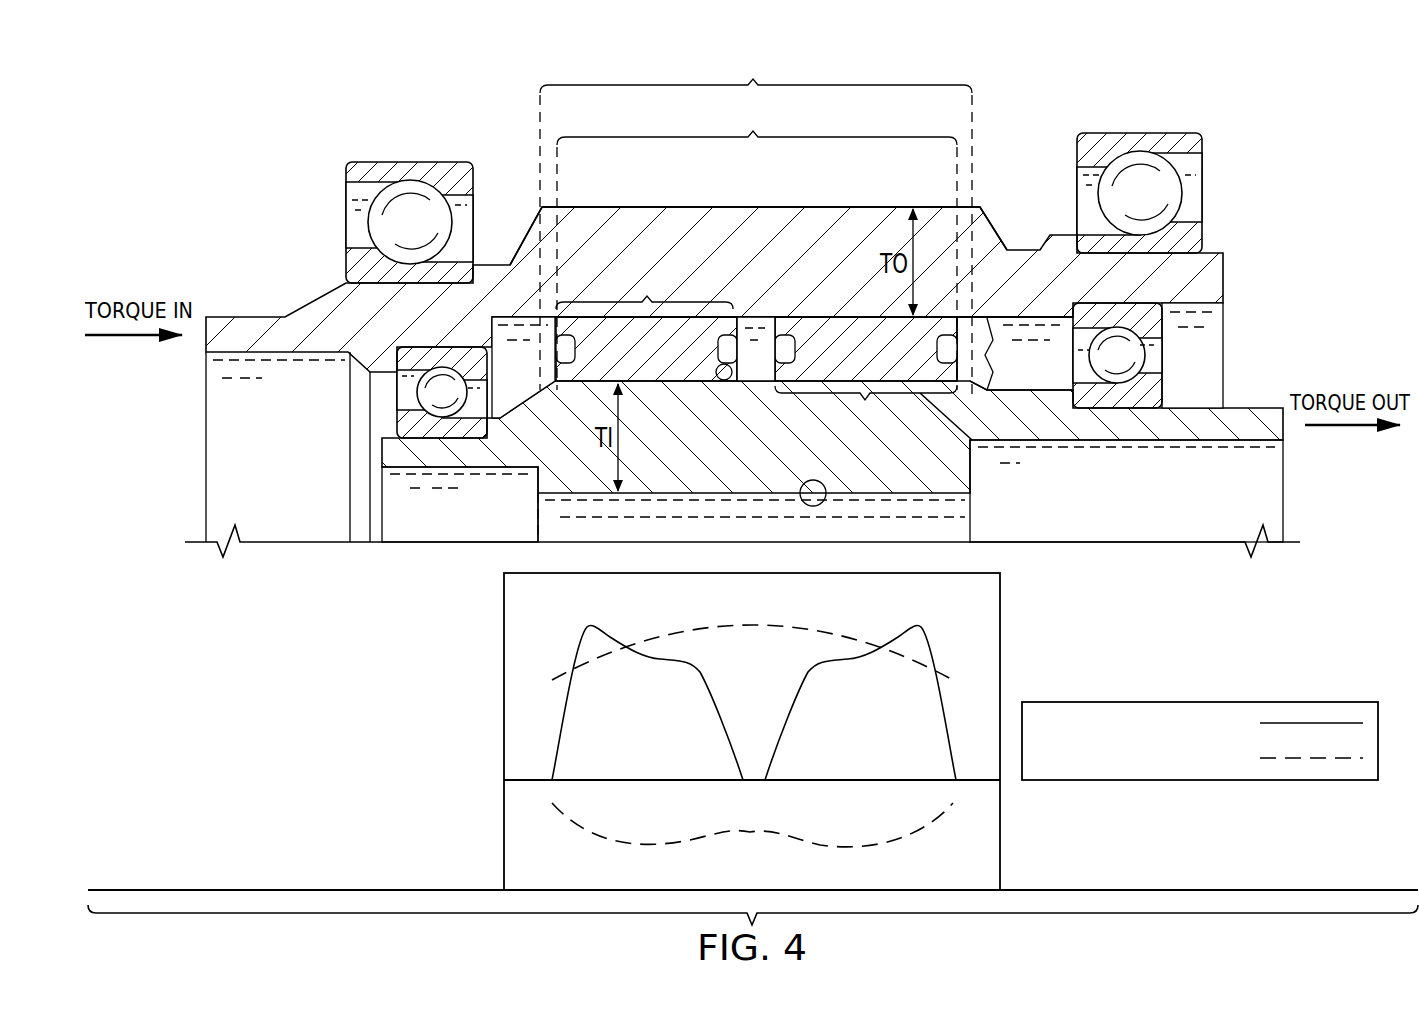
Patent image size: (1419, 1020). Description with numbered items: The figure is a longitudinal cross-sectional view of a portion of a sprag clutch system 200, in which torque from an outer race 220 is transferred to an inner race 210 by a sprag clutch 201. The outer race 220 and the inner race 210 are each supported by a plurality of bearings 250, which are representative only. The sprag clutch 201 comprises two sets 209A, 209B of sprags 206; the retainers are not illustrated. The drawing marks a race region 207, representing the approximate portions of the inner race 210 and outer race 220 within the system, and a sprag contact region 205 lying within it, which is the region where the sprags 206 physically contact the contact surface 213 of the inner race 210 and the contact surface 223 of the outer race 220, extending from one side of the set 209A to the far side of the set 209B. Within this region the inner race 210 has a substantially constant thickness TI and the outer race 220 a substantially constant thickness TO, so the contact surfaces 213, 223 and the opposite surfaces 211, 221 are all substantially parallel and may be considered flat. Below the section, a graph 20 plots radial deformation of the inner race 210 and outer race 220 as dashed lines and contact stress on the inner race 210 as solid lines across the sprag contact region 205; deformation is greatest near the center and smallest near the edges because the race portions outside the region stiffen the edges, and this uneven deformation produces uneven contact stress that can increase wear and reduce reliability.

The sprag clutch system 200 is at (464, 99).
The sprag clutch 201 is at (1015, 353).
The sprag contact region 205 is at (757, 243).
The sprags 206 is at (666, 365).
The race region 207 is at (756, 220).
The first set of sprags 209A is at (644, 284).
The second set of sprags 209B is at (866, 410).
The inner race 210 is at (778, 457).
The opposite surface of inner race 211 is at (823, 488).
The contact surface of inner race 213 is at (717, 378).
The outer race 220 is at (740, 262).
The opposite surface of outer race 221 is at (733, 206).
The contact surface of outer race 223 is at (770, 317).
The bearings 250 is at (332, 220).
The graph 20 is at (465, 749).